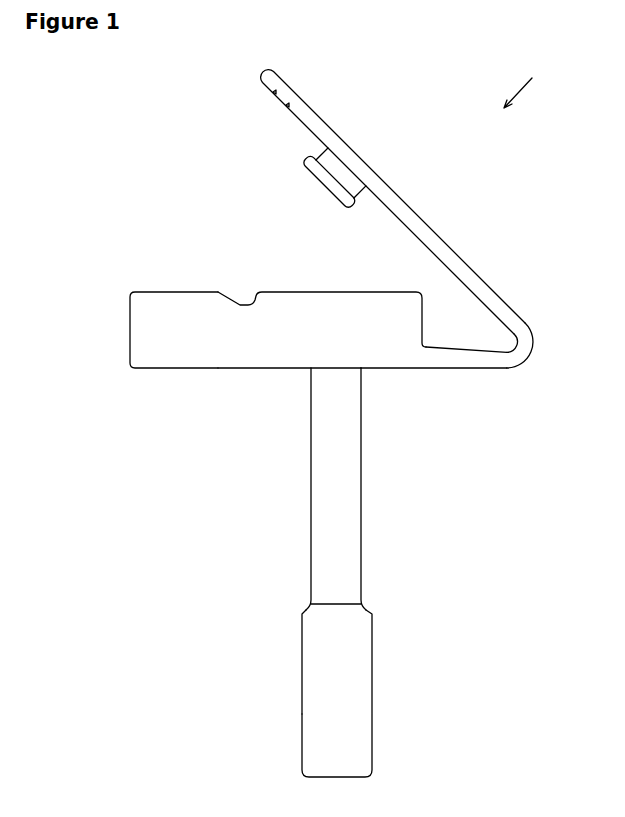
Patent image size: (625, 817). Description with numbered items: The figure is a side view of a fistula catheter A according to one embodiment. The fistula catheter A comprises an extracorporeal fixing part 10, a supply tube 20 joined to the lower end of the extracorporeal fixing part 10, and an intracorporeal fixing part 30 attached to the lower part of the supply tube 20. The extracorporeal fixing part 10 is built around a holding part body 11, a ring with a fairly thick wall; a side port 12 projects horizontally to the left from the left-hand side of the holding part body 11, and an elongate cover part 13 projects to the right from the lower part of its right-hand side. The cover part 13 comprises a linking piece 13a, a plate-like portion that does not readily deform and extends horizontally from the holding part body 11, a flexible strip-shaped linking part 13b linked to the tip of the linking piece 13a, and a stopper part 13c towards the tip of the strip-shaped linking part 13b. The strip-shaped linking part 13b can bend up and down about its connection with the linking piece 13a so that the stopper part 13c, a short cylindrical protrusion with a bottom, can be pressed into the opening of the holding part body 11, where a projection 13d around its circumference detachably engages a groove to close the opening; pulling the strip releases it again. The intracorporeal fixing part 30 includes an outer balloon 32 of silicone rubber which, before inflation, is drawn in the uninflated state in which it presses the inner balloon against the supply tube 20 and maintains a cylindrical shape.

The fistula catheter A is at (529, 88).
The extracorporeal fixing part 10 is at (236, 213).
The holding part body 11 is at (321, 297).
The side port 12 is at (152, 297).
The cover part 13 is at (522, 309).
The linking piece 13a is at (468, 369).
The strip-shaped linking part 13b is at (455, 252).
The stopper part 13c is at (321, 184).
The projection 13d is at (311, 158).
The supply tube 20 is at (353, 512).
The intracorporeal fixing part 30 is at (382, 686).
The outer balloon 32 is at (302, 692).